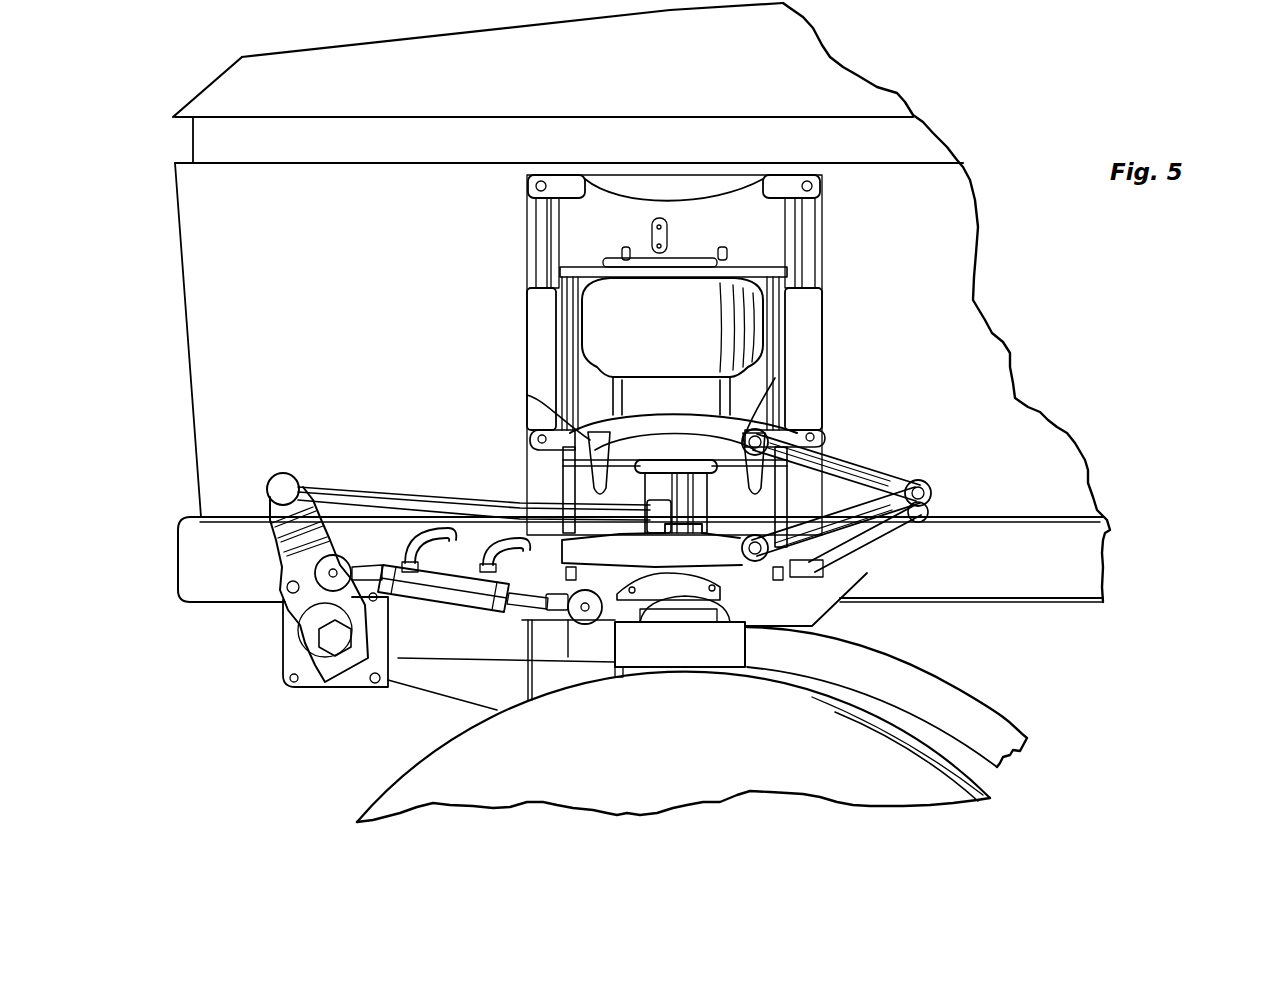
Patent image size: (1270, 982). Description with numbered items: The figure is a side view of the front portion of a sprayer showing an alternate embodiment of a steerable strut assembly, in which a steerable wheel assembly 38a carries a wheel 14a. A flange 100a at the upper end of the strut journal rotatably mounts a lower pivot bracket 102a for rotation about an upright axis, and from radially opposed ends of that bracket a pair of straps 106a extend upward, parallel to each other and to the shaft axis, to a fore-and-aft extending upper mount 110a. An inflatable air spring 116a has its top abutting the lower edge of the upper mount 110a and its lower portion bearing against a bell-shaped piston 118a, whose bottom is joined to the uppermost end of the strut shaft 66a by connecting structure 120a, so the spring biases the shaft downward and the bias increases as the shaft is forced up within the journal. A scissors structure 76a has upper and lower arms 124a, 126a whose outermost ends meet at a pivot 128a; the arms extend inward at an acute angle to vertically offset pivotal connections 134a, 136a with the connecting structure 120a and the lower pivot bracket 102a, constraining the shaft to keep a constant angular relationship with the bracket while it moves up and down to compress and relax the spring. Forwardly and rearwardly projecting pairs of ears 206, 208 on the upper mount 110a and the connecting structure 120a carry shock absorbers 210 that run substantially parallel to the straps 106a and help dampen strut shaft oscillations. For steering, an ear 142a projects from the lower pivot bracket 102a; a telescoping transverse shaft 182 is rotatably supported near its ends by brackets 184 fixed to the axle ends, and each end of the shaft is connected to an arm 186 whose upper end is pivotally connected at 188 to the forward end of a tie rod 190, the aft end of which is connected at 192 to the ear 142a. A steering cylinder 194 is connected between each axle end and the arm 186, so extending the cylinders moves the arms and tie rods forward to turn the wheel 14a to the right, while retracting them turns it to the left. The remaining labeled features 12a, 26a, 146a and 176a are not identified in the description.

The vehicle body 12a is at (1023, 606).
The wheel 14a is at (540, 766).
The hood 26a is at (302, 96).
The steerable wheel assembly 38a is at (515, 271).
The strut shaft 66a is at (704, 492).
The scissors structure 76a is at (919, 486).
The flange 100a is at (718, 615).
The lower pivot bracket 102a is at (745, 585).
The straps 106a is at (545, 318).
The upper mount 110a is at (622, 212).
The air spring 116a is at (678, 331).
The piston 118a is at (680, 353).
The connecting structure 120a is at (528, 396).
The upper arm 124a is at (826, 467).
The lower arm 126a is at (880, 530).
The pivot 128a is at (932, 494).
The pivotal connection 134a is at (778, 400).
The pivotal connection 136a is at (815, 548).
The ear 142a is at (690, 575).
The cross plate 146a is at (562, 461).
The fender 176a is at (982, 694).
The telescoping transverse shaft 182 is at (330, 636).
The brackets 184 is at (407, 686).
The arm 186 is at (289, 548).
The pivotal connection 188 is at (286, 474).
The tie rod 190 is at (355, 489).
The connection 192 is at (568, 496).
The steering cylinder 194 is at (423, 612).
The ears 206 is at (560, 151).
The ears 208 is at (531, 438).
The shock absorbers 210 is at (532, 320).